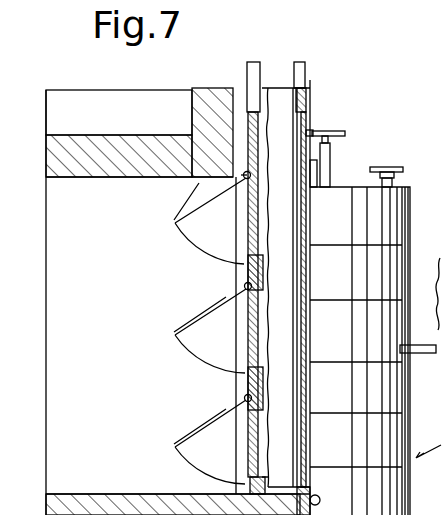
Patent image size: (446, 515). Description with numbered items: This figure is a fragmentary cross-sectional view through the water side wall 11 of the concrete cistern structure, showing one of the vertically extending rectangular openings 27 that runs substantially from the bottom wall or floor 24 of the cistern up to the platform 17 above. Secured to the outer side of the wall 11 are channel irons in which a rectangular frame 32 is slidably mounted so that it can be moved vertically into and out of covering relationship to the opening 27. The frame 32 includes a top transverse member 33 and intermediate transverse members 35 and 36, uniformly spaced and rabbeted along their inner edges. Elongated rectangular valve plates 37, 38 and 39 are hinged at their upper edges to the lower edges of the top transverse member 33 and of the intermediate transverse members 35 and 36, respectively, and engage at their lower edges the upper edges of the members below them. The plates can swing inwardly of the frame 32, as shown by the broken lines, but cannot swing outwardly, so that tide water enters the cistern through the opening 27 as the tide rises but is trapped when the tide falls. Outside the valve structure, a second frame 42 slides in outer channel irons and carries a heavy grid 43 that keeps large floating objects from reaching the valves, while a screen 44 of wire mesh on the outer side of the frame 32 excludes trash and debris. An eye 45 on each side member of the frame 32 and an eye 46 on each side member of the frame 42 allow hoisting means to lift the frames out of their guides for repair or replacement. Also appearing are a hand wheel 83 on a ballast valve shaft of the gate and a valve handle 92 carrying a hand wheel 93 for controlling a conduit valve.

The water side wall 11 is at (273, 92).
The platform 17 is at (95, 142).
The bottom wall or floor 24 is at (105, 500).
The opening 27 is at (291, 451).
The rectangular frame 32 is at (250, 118).
The top transverse member 33 is at (241, 176).
The intermediate transverse member 35 is at (250, 271).
The intermediate transverse member 36 is at (250, 383).
The valve plate 37 is at (249, 218).
The valve plate 38 is at (250, 333).
The valve plate 39 is at (250, 440).
The frame 42 is at (268, 127).
The heavy grid 43 is at (305, 234).
The screen 44 is at (309, 128).
The eye 45 is at (252, 68).
The eye 46 is at (305, 64).
The hand wheel 83 is at (398, 167).
The valve handle 92 is at (331, 160).
The hand wheel 93 is at (346, 133).